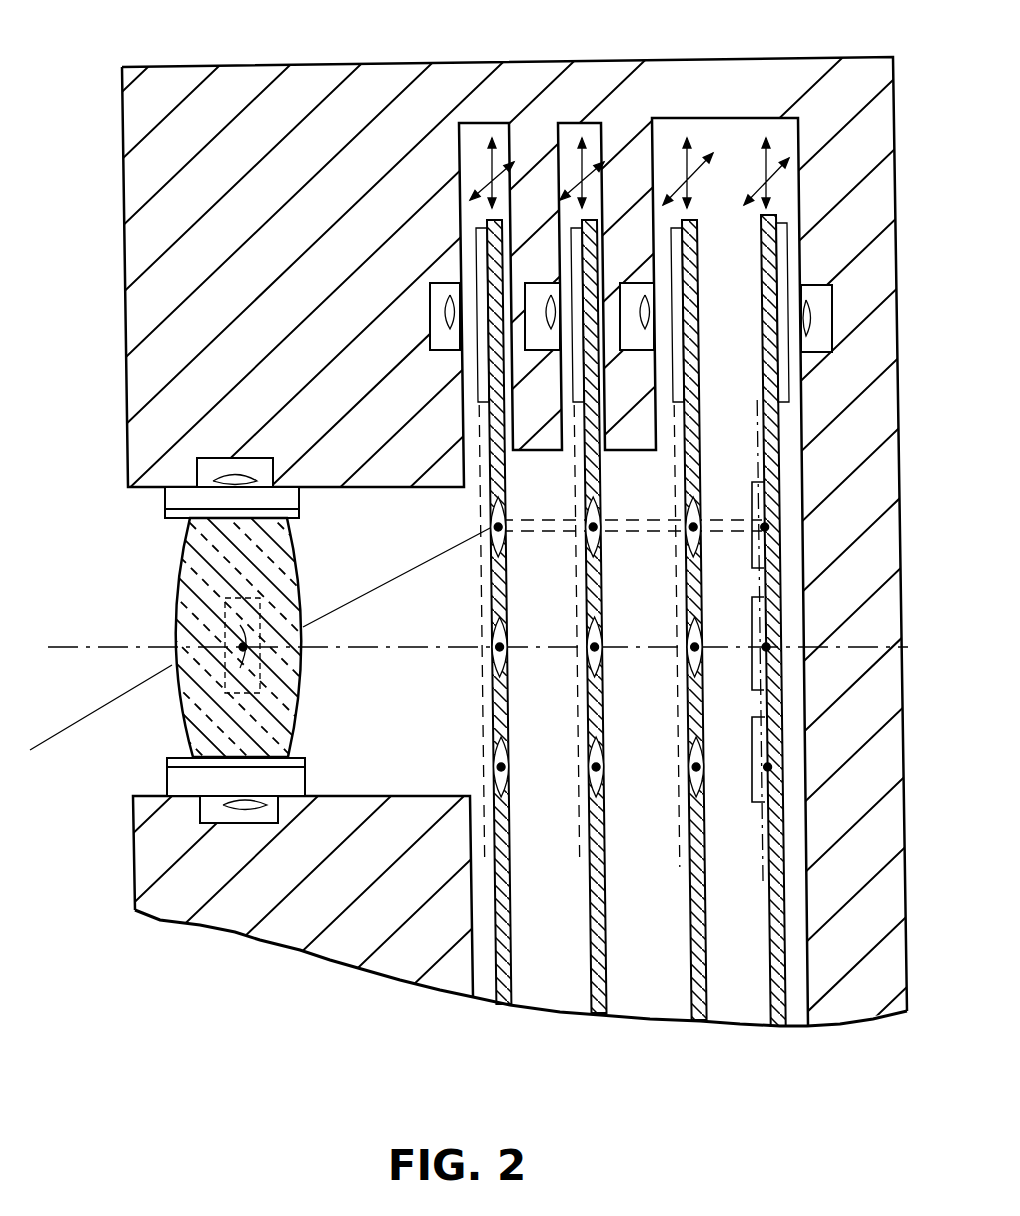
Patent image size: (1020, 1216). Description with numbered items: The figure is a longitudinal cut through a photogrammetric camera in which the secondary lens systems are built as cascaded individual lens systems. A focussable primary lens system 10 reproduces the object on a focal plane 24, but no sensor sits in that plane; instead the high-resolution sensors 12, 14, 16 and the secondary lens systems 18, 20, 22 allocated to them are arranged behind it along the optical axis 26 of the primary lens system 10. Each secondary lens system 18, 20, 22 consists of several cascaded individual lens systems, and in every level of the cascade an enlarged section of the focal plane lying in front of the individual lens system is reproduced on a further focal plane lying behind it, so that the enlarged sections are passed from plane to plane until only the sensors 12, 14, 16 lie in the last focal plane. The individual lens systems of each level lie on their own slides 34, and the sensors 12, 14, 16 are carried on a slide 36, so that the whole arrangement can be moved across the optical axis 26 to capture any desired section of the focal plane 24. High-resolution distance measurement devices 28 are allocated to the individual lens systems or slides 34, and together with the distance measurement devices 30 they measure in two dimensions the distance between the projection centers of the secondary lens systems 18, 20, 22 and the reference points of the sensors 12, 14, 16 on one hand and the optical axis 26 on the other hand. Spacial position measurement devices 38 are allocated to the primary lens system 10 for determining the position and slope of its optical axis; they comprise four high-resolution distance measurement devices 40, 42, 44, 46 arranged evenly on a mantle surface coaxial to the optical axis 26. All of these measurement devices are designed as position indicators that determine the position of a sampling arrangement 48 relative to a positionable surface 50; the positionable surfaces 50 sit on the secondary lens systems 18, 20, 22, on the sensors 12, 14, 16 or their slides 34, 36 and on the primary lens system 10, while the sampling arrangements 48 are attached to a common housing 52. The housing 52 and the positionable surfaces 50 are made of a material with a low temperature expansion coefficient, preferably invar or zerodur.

The primary lens system 10 is at (296, 730).
The high-resolution sensor 12 is at (764, 491).
The high-resolution sensor 14 is at (765, 600).
The high-resolution sensor 16 is at (768, 731).
The secondary lens system 18 is at (717, 493).
The secondary lens system 20 is at (717, 613).
The secondary lens system 22 is at (718, 780).
The focal plane 24 is at (483, 723).
The optical axis 26 is at (397, 645).
The distance measurement device 28 is at (540, 609).
The distance measurement device 30 is at (806, 608).
The slide 34 is at (510, 1005).
The slide 36 is at (781, 1026).
The spacial position measurement device 38 is at (293, 640).
The high-resolution distance measurement device 40 is at (175, 477).
The high-resolution distance measurement device 42 is at (159, 644).
The high-resolution distance measurement device 44 is at (178, 813).
The high-resolution distance measurement device 46 is at (224, 612).
The sampling arrangement 48 is at (820, 303).
The positionable surface 50 is at (769, 288).
The housing 52 is at (438, 78).